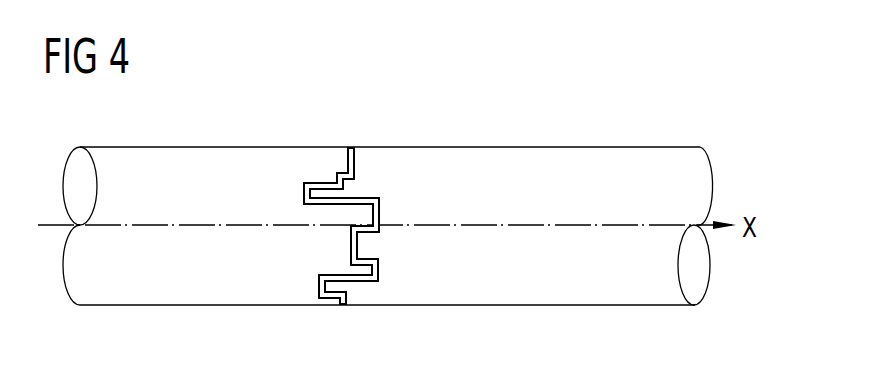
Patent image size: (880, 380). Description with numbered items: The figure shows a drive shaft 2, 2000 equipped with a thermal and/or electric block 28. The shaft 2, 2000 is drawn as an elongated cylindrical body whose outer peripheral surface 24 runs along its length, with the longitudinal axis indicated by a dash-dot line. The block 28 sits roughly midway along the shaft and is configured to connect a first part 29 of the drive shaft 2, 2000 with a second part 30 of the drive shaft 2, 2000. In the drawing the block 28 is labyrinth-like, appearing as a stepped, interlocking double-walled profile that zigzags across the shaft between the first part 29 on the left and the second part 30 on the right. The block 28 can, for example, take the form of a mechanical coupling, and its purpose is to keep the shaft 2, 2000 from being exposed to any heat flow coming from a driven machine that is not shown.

The drive shaft 2 is at (388, 228).
The shaft 2000 is at (518, 156).
The outer peripheral surface 24 is at (615, 305).
The thermal and/or electric block 28 is at (380, 278).
The first part 29 is at (185, 292).
The second part 30 is at (513, 293).